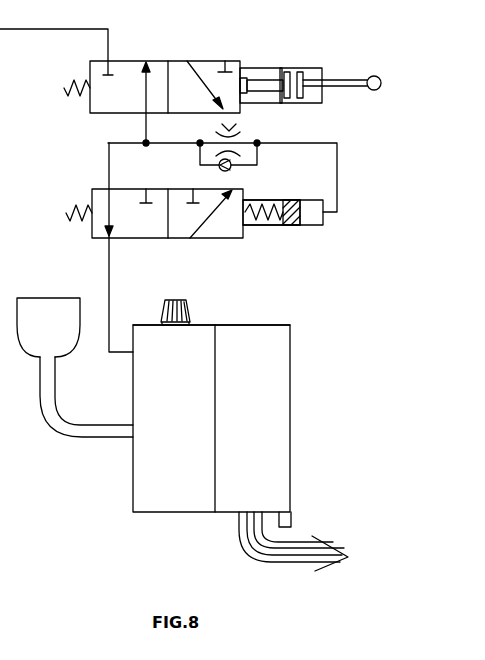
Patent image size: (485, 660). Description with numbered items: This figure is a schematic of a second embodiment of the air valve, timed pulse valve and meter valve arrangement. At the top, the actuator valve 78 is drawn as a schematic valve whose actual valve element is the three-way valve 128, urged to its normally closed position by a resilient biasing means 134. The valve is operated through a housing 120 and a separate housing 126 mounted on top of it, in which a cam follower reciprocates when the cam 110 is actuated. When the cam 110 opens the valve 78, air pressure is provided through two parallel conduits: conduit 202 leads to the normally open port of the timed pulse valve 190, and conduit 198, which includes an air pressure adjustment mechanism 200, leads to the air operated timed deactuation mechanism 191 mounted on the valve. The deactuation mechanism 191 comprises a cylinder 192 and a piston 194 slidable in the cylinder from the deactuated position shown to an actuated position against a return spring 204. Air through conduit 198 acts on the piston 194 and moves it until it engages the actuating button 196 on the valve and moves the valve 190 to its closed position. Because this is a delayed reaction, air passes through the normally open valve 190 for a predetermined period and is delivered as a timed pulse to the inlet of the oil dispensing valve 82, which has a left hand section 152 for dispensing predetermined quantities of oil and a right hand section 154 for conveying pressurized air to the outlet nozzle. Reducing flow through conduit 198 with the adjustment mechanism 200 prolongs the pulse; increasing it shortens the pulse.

The actuator valve 78 is at (205, 55).
The three-way valve 128 is at (139, 59).
The resilient biasing means 134 is at (67, 90).
The housing 126 is at (257, 66).
The housing 120 is at (310, 65).
The cam 110 is at (348, 77).
The conduit 202 is at (108, 158).
The air pressure adjustment mechanism 200 is at (192, 163).
The conduit 198 is at (313, 141).
The timed pulse valve 190 is at (155, 240).
The return spring 204 is at (70, 216).
The cylinder 192 is at (320, 226).
The timed deactuation mechanism 191 is at (261, 232).
The actuating button 196 is at (250, 205).
The piston 194 is at (292, 223).
The oil dispensing valve 82 is at (150, 519).
The left hand section 152 is at (197, 333).
The right hand section 154 is at (268, 333).